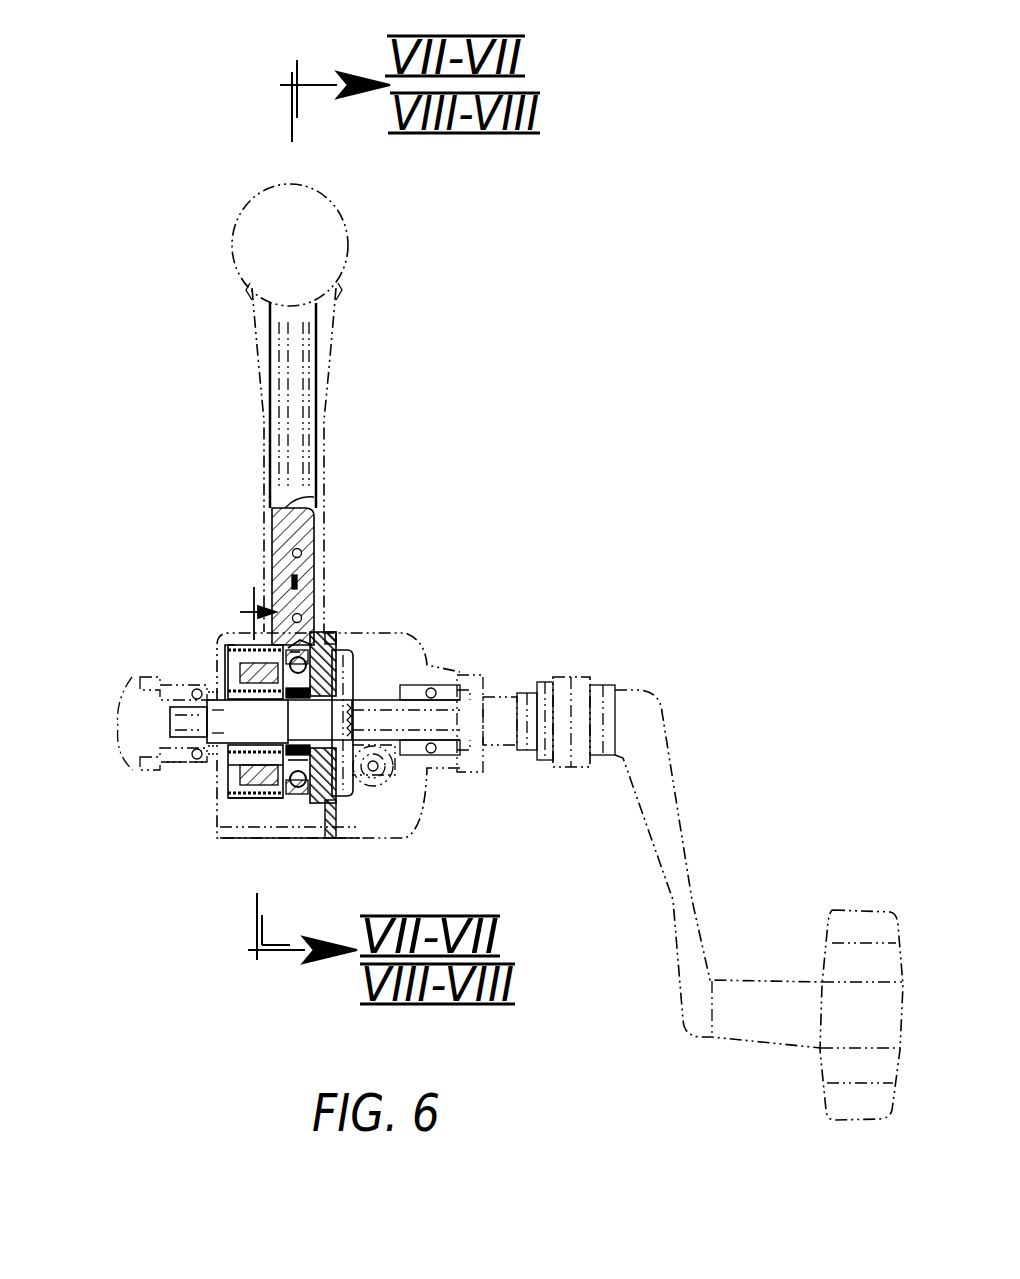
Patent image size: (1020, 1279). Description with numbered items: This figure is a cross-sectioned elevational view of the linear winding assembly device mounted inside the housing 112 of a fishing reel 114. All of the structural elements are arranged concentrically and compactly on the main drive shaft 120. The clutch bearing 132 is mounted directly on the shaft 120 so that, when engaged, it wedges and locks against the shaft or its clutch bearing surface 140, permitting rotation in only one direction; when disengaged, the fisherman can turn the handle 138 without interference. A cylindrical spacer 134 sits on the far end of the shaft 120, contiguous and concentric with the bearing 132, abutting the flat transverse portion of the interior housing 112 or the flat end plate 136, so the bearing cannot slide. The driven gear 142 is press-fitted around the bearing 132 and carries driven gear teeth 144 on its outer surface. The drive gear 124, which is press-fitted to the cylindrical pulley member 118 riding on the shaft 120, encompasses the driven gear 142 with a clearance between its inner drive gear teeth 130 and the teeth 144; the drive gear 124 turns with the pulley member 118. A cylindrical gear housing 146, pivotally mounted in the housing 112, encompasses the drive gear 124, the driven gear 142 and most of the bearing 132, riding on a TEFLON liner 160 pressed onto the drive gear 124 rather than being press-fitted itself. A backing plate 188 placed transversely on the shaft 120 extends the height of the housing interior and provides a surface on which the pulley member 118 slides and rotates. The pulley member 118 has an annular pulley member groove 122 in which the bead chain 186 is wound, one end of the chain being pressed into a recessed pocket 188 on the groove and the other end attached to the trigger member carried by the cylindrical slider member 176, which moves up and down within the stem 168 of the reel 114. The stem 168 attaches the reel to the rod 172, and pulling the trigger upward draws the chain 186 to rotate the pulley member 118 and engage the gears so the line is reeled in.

The housing 112 is at (413, 822).
The fishing reel 114 is at (205, 940).
The pulley member 118 is at (297, 760).
The main drive shaft 120 is at (186, 722).
The pulley member groove 122 is at (300, 645).
The drive gear 124 is at (245, 802).
The drive gear teeth 130 is at (238, 785).
The clutch bearing 132 is at (228, 688).
The spacer 134 is at (218, 688).
The end plate 136 is at (172, 685).
The handle 138 is at (680, 800).
The clutch bearing surface 140 is at (272, 738).
The driven gear 142 is at (180, 762).
The driven gear teeth 144 is at (233, 768).
The gear housing 146 is at (231, 858).
The liner 160 is at (242, 768).
The stem 168 is at (322, 416).
The rod 172 is at (333, 207).
The slider member 176 is at (316, 498).
The bead chain 186 is at (305, 760).
The backing plate 188 is at (326, 650).